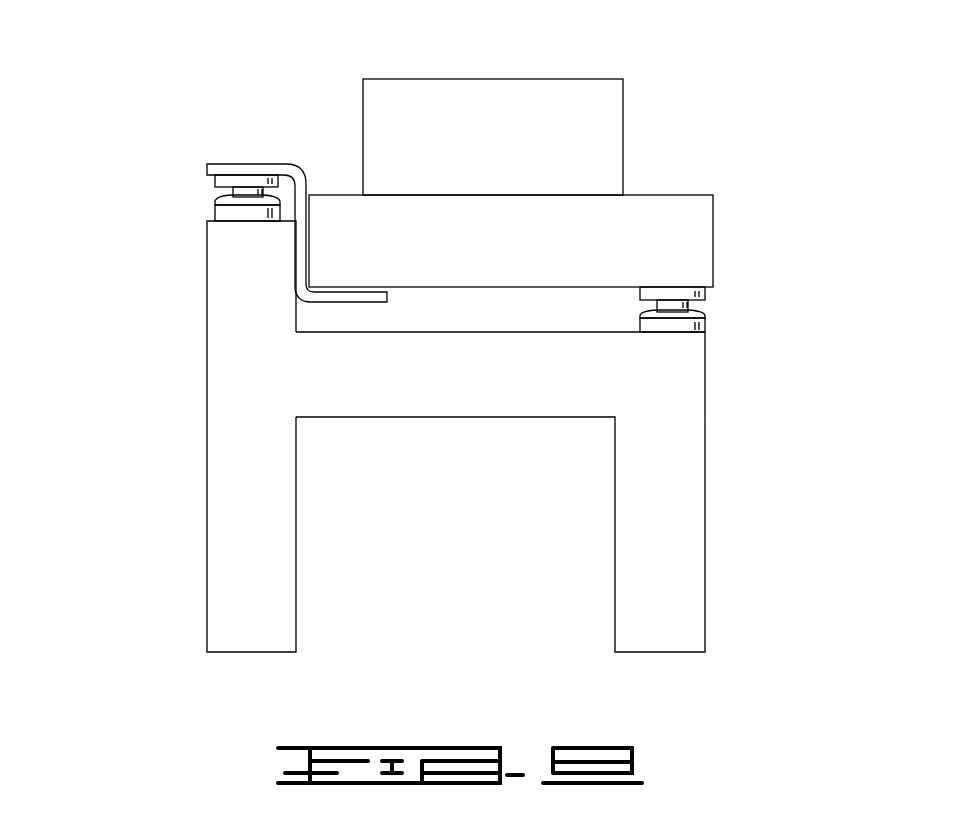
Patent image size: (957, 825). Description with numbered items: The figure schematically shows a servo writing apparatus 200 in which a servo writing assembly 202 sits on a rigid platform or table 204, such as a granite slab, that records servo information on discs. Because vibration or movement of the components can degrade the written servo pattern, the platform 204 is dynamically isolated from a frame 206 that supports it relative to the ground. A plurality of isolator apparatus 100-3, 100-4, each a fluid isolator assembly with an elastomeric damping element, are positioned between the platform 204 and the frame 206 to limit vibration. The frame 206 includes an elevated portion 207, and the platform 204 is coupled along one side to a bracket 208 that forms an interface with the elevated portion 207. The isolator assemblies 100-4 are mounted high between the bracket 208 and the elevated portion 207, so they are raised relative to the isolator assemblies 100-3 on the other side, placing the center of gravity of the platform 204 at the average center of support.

The servo writing apparatus 200 is at (683, 100).
The servo writing assembly 202 is at (428, 79).
The rigid platform or table 204 is at (690, 195).
The frame 206 is at (705, 483).
The elevated portion 207 is at (207, 512).
The bracket 208 is at (309, 275).
The isolator apparatus 100-3 is at (731, 299).
The isolator apparatus 100-4 is at (193, 187).